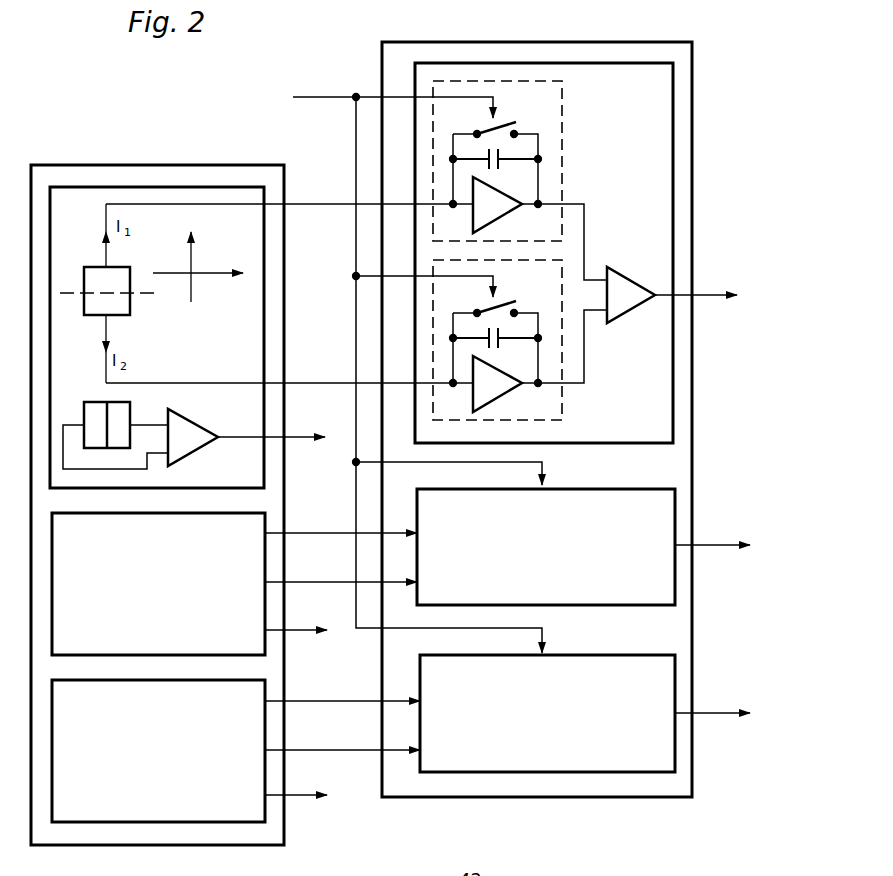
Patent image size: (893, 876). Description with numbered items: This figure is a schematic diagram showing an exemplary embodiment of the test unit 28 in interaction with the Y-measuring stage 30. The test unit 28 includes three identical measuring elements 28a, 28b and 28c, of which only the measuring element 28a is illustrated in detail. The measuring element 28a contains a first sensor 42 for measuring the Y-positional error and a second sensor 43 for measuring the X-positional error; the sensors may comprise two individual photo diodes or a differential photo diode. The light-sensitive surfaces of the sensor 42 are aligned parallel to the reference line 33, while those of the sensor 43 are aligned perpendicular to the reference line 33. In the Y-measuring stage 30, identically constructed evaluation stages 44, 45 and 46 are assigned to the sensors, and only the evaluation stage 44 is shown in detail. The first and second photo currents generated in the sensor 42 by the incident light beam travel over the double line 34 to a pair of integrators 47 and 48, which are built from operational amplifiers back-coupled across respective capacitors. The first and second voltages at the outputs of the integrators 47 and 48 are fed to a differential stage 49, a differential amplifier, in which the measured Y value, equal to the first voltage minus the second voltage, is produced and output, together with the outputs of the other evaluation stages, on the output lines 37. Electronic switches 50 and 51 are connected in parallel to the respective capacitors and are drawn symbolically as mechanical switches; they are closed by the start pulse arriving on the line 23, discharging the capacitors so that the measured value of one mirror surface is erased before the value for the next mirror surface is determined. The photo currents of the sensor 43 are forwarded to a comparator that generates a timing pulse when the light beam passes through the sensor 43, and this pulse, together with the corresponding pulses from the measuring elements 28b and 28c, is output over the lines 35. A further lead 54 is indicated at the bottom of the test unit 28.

The test unit 28 is at (138, 870).
The measuring element 28a is at (91, 200).
The measuring element 28b is at (158, 584).
The measuring element 28c is at (158, 751).
The line 23 is at (329, 100).
The Y-measuring stage 30 is at (560, 792).
The reference line 33 is at (66, 284).
The double line 34 is at (310, 208).
The lines 35 is at (296, 438).
The output lines 37 is at (706, 300).
The first sensor 42 is at (202, 283).
The second sensor 43 is at (95, 416).
The evaluation stage 44 is at (606, 446).
The evaluation stage 45 is at (617, 588).
The evaluation stage 46 is at (590, 676).
The integrator 47 is at (546, 118).
The integrator 48 is at (548, 406).
The differential stage 49 is at (628, 296).
The electronic switch 50 is at (500, 120).
The electronic switch 51 is at (503, 298).
The line 54 is at (252, 868).